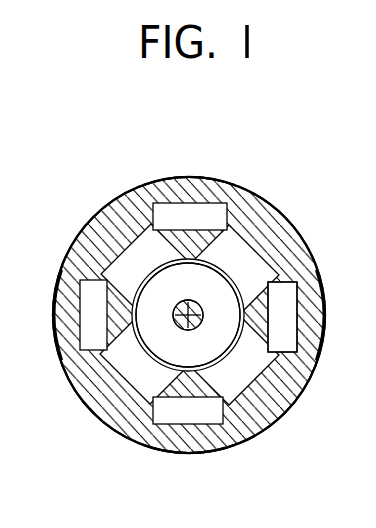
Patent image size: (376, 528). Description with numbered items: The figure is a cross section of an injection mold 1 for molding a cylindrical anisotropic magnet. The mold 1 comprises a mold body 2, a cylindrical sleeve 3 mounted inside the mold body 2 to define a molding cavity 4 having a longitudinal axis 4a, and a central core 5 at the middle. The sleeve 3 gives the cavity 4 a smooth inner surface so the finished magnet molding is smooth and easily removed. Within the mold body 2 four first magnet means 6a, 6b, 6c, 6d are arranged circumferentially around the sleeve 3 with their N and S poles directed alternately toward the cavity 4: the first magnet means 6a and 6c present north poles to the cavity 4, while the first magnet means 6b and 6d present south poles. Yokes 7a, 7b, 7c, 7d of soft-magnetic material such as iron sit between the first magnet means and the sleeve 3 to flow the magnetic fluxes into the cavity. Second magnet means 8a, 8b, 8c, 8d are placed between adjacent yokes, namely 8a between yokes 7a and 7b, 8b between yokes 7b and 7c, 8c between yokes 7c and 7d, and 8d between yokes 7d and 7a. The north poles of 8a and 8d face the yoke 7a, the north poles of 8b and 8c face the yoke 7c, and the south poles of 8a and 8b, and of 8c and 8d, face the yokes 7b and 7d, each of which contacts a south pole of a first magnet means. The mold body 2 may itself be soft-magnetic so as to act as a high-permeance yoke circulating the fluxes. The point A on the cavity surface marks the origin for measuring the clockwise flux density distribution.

The mold 1 is at (270, 187).
The mold body 2 is at (313, 380).
The cylindrical sleeve 3 is at (200, 317).
The molding cavity 4 is at (178, 361).
The longitudinal axis 4a is at (175, 313).
The central core 5 is at (287, 347).
The first magnet means 6a is at (157, 204).
The first magnet means 6b is at (300, 349).
The first magnet means 6c is at (173, 400).
The first magnet means 6d is at (92, 337).
The yoke 7a is at (156, 224).
The yoke 7b is at (297, 318).
The yoke 7c is at (204, 416).
The yoke 7d is at (100, 288).
The second magnet means 8a is at (242, 258).
The second magnet means 8b is at (255, 372).
The second magnet means 8c is at (128, 375).
The second magnet means 8d is at (122, 246).
The point A is at (224, 279).